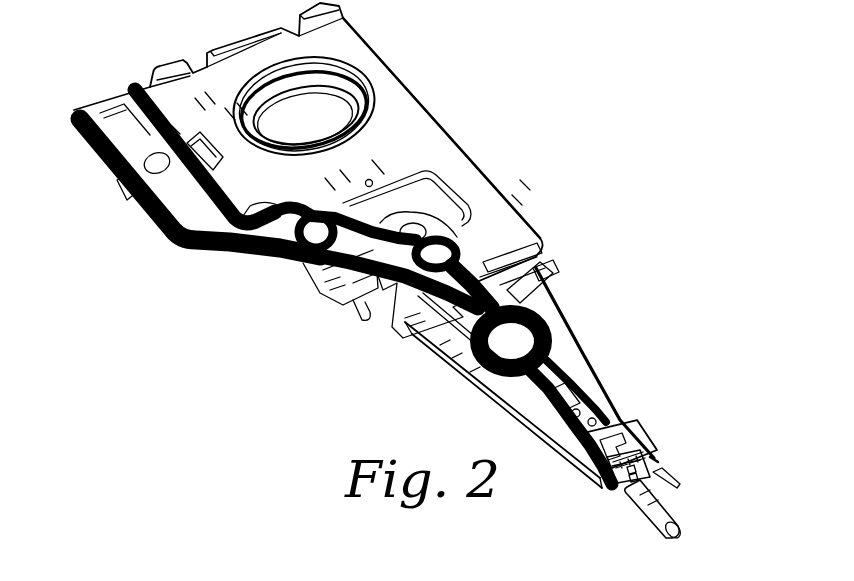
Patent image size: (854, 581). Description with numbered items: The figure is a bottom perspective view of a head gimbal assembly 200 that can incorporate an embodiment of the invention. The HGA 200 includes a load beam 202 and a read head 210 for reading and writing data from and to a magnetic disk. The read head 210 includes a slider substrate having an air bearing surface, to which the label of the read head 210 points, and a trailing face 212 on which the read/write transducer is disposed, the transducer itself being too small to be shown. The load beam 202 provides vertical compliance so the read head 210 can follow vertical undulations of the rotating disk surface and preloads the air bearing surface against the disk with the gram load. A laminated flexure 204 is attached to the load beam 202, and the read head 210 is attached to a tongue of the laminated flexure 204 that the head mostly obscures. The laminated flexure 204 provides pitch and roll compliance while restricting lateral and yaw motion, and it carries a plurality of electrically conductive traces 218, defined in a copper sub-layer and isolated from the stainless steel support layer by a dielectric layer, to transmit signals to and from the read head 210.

The head gimbal assembly 200 is at (533, 139).
The load beam 202 is at (446, 357).
The laminated flexure 204 is at (610, 490).
The read head 210 is at (632, 424).
The trailing face 212 is at (658, 462).
The electrically conductive traces 218 is at (232, 240).